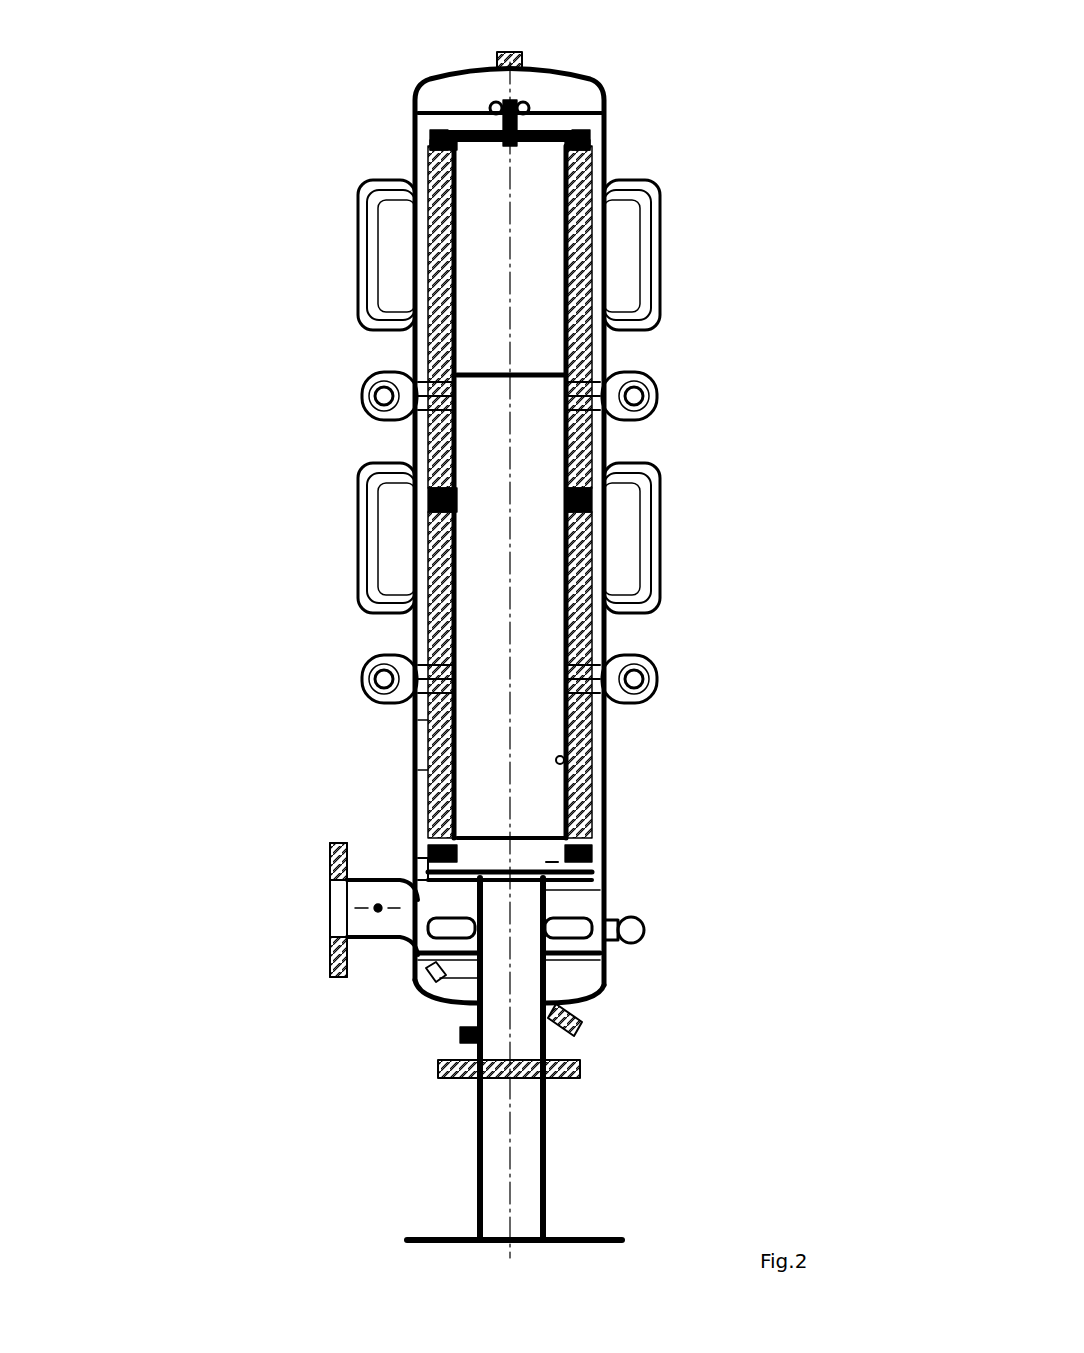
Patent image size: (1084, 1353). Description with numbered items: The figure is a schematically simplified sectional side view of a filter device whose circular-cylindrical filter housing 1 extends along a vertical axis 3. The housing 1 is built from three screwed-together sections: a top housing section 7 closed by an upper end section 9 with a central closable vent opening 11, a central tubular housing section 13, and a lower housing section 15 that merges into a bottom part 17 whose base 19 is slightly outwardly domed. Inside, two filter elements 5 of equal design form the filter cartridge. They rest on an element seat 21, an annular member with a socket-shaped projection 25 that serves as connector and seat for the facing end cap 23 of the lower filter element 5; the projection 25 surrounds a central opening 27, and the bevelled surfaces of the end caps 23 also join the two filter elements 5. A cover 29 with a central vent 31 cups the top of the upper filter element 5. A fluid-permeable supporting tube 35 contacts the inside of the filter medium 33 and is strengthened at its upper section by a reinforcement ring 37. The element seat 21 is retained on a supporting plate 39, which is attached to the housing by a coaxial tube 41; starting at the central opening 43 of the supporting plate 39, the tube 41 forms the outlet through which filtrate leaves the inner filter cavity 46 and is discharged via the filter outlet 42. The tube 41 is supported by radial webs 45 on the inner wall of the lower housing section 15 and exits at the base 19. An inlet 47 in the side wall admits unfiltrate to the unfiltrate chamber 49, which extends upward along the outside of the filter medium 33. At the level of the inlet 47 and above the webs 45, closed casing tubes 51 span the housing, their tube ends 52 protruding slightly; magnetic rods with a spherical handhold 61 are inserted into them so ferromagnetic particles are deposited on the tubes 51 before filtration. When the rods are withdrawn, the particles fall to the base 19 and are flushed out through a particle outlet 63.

The filter housing 1 is at (312, 440).
The vertical axis 3 is at (513, 1253).
The filter element 5 is at (600, 345).
The top housing section 7 is at (400, 250).
The upper end section 9 is at (562, 72).
The vent opening 11 is at (498, 58).
The central tubular housing section 13 is at (410, 525).
The lower housing section 15 is at (418, 722).
The bottom part 17 is at (416, 962).
The base 19 is at (452, 992).
The element seat 21 is at (428, 846).
The end cap 23 is at (436, 136).
The projection 25 is at (472, 838).
The central opening 27 is at (600, 845).
The cover 29 is at (525, 120).
The vent 31 is at (530, 108).
The filter medium 33 is at (604, 432).
The supporting tube 35 is at (582, 760).
The reinforcement ring 37 is at (458, 374).
The supporting plate 39 is at (556, 900).
The tube 41 is at (552, 902).
The filter outlet 42 is at (556, 1012).
The central opening 43 is at (548, 872).
The webs 45 is at (560, 947).
The inner filter cavity 46 is at (420, 768).
The inlet 47 is at (336, 920).
The unfiltrate chamber 49 is at (432, 968).
The casing tubes 51 is at (412, 960).
The tube ends 52 is at (630, 930).
The spherical handhold 61 is at (622, 922).
The particle outlet 63 is at (585, 1012).